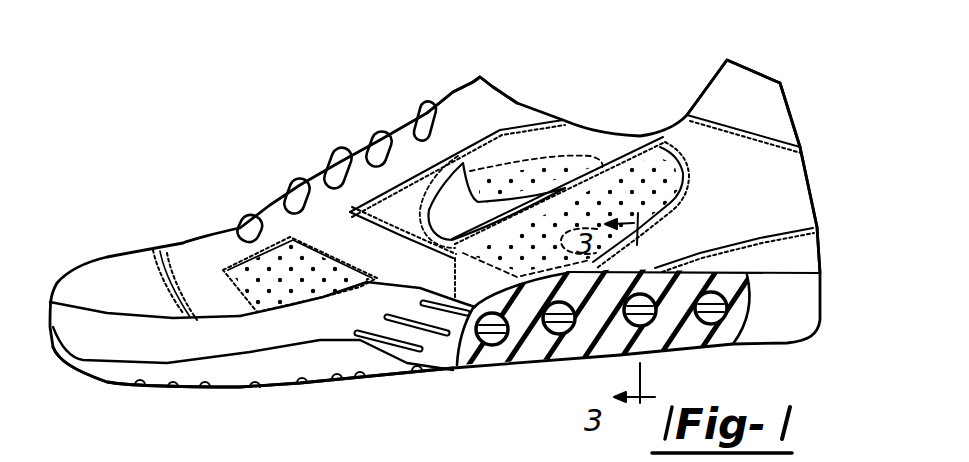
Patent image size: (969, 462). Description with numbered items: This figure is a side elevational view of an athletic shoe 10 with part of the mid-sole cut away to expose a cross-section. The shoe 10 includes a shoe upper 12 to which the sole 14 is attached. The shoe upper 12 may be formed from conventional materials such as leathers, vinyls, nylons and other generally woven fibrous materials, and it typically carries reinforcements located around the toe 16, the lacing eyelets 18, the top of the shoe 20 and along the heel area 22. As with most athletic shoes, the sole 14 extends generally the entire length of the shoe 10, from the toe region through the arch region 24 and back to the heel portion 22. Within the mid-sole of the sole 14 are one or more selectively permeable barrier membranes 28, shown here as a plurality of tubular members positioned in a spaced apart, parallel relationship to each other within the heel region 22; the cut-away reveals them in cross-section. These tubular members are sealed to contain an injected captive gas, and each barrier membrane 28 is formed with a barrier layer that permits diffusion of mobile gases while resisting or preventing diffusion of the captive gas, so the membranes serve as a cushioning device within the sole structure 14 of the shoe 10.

The shoe 10 is at (269, 160).
The shoe upper 12 is at (222, 240).
The sole 14 is at (228, 366).
The toe 16 is at (102, 283).
The lacing eyelets 18 is at (452, 118).
The top of the shoe 20 is at (750, 110).
The heel area 22 is at (815, 253).
The arch region 24 is at (453, 368).
The barrier membranes 28 is at (735, 345).